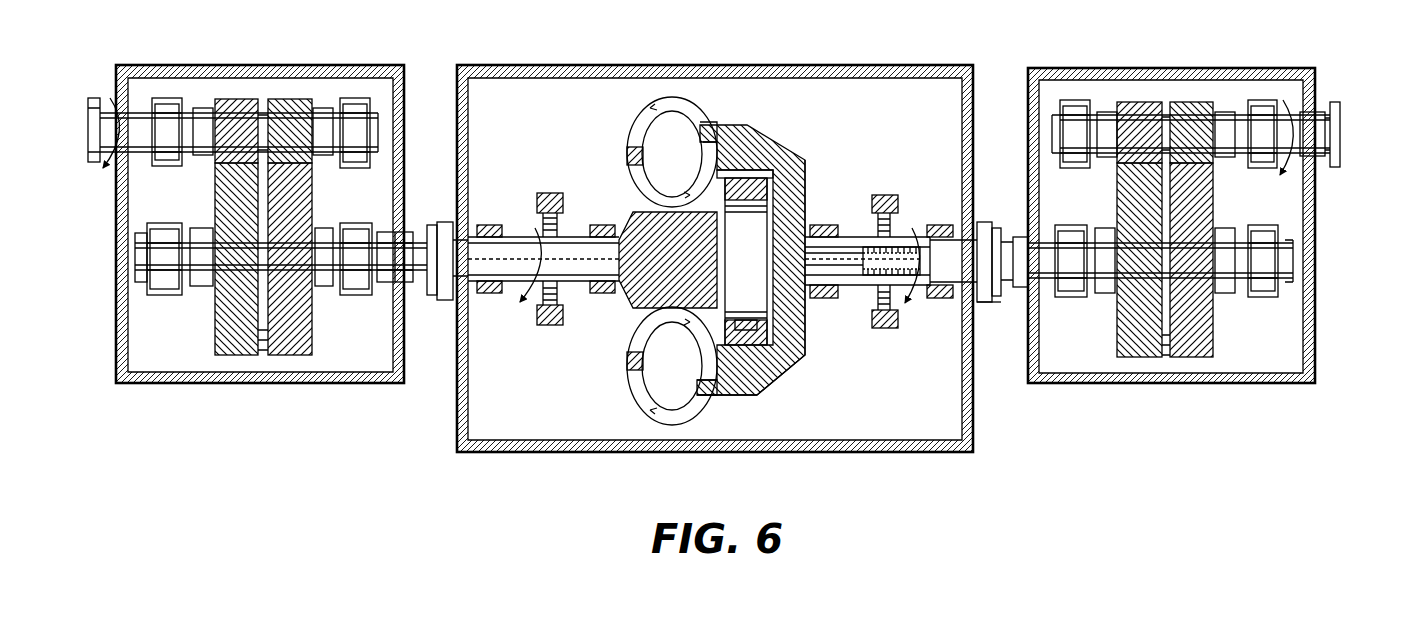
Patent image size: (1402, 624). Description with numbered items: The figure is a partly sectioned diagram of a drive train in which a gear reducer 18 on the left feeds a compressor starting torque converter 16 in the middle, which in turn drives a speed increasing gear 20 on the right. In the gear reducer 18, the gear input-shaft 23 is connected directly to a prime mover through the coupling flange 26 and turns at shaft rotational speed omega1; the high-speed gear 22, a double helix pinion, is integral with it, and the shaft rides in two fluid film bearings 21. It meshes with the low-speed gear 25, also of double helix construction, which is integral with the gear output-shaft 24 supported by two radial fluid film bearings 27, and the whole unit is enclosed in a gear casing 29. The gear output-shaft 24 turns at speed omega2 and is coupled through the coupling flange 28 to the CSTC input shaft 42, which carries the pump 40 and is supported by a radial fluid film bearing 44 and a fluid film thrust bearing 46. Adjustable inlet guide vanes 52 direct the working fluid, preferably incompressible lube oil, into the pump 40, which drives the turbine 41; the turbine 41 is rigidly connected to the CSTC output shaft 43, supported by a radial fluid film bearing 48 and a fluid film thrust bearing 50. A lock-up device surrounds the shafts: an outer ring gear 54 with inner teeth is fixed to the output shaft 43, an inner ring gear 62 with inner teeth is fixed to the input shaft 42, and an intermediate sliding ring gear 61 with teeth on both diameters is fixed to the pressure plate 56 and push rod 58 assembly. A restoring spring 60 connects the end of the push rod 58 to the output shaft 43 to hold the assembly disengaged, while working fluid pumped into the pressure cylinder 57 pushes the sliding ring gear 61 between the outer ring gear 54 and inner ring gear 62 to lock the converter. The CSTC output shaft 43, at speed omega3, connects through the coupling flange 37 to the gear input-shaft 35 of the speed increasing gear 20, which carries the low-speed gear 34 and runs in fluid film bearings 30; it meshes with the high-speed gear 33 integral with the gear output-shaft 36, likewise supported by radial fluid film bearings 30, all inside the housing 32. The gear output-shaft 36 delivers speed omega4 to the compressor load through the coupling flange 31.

The compressor starting torque converter 16 is at (602, 470).
The gear reducer 18 is at (147, 418).
The speed increasing gear 20 is at (1282, 414).
The fluid film bearings 21 is at (165, 98).
The high-speed gear 22 is at (248, 100).
The gear input-shaft 23 is at (136, 108).
The gear output-shaft 24 is at (395, 285).
The low-speed gear 25 is at (270, 356).
The coupling flange 26 is at (88, 128).
The radial fluid film bearings 27 is at (160, 296).
The coupling flange 28 is at (432, 224).
The gear casing 29 is at (292, 100).
The fluid film bearings 30 is at (1075, 100).
The coupling flange 31 is at (1340, 133).
The housing 32 is at (1140, 102).
The high-speed gear 33 is at (1185, 102).
The low-speed gear 34 is at (1175, 358).
The gear input-shaft 35 is at (990, 224).
The gear output-shaft 36 is at (1305, 112).
The coupling flange 37 is at (985, 303).
The pump 40 is at (632, 214).
The turbine 41 is at (790, 152).
The CSTC input shaft 42 is at (540, 238).
The CSTC output shaft 43 is at (905, 238).
The radial fluid film bearing 44 is at (488, 294).
The fluid film thrust bearing 46 is at (552, 326).
The radial fluid film bearing 48 is at (940, 225).
The fluid film thrust bearing 50 is at (882, 328).
The adjustable inlet guide vanes 52 is at (627, 375).
The outer ring gear 54 is at (752, 170).
The pressure plate 56 is at (775, 370).
The pressure cylinder 57 is at (798, 345).
The push rod 58 is at (830, 262).
The restoring spring 60 is at (872, 276).
The intermediate sliding ring gear 61 is at (755, 322).
The inner ring gear 62 is at (762, 196).
The shaft rotational speed omega1 is at (96, 147).
The shaft rotational speed omega2 is at (520, 278).
The shaft rotational speed omega3 is at (921, 278).
The shaft rotational speed omega4 is at (1280, 152).